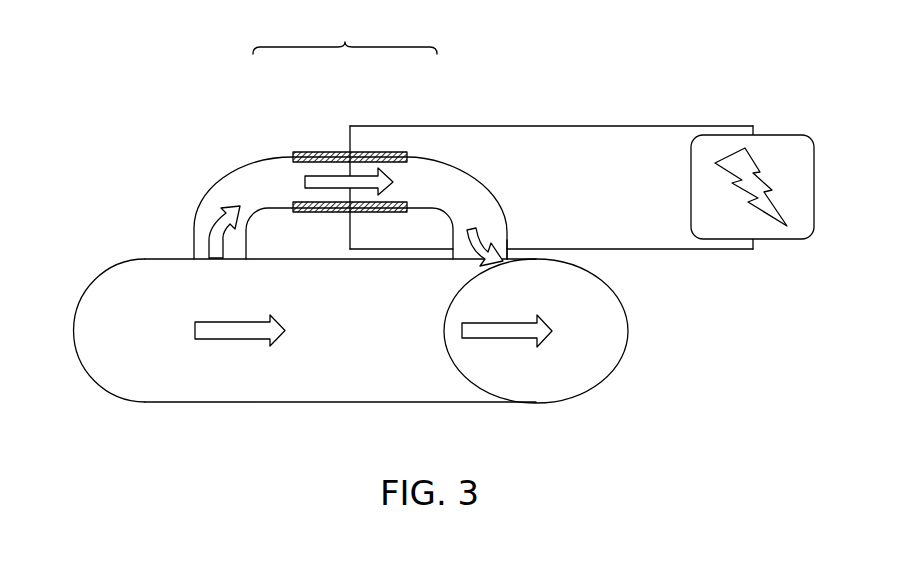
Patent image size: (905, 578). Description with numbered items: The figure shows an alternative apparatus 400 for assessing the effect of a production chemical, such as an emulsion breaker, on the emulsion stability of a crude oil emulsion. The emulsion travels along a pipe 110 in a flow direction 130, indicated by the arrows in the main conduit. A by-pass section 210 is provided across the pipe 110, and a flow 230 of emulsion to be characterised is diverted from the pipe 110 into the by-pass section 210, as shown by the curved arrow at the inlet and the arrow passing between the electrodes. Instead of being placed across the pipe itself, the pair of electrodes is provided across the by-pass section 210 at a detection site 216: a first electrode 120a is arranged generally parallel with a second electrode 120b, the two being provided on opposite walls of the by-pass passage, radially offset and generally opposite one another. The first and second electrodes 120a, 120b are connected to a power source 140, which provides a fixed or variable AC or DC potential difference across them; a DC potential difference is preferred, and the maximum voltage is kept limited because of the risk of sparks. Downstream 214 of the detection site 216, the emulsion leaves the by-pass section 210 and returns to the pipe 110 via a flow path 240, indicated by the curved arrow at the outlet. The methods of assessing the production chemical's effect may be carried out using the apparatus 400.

The apparatus 400 is at (112, 150).
The pipe 110 is at (305, 406).
The first electrode 120a is at (313, 150).
The second electrode 120b is at (313, 215).
The flow direction 130 is at (471, 340).
The power source 140 is at (782, 243).
The by-pass section 210 is at (192, 228).
The downstream 214 is at (534, 240).
The detection site 216 is at (345, 30).
The flow of emulsion 230 is at (299, 175).
The flow path 240 is at (481, 223).